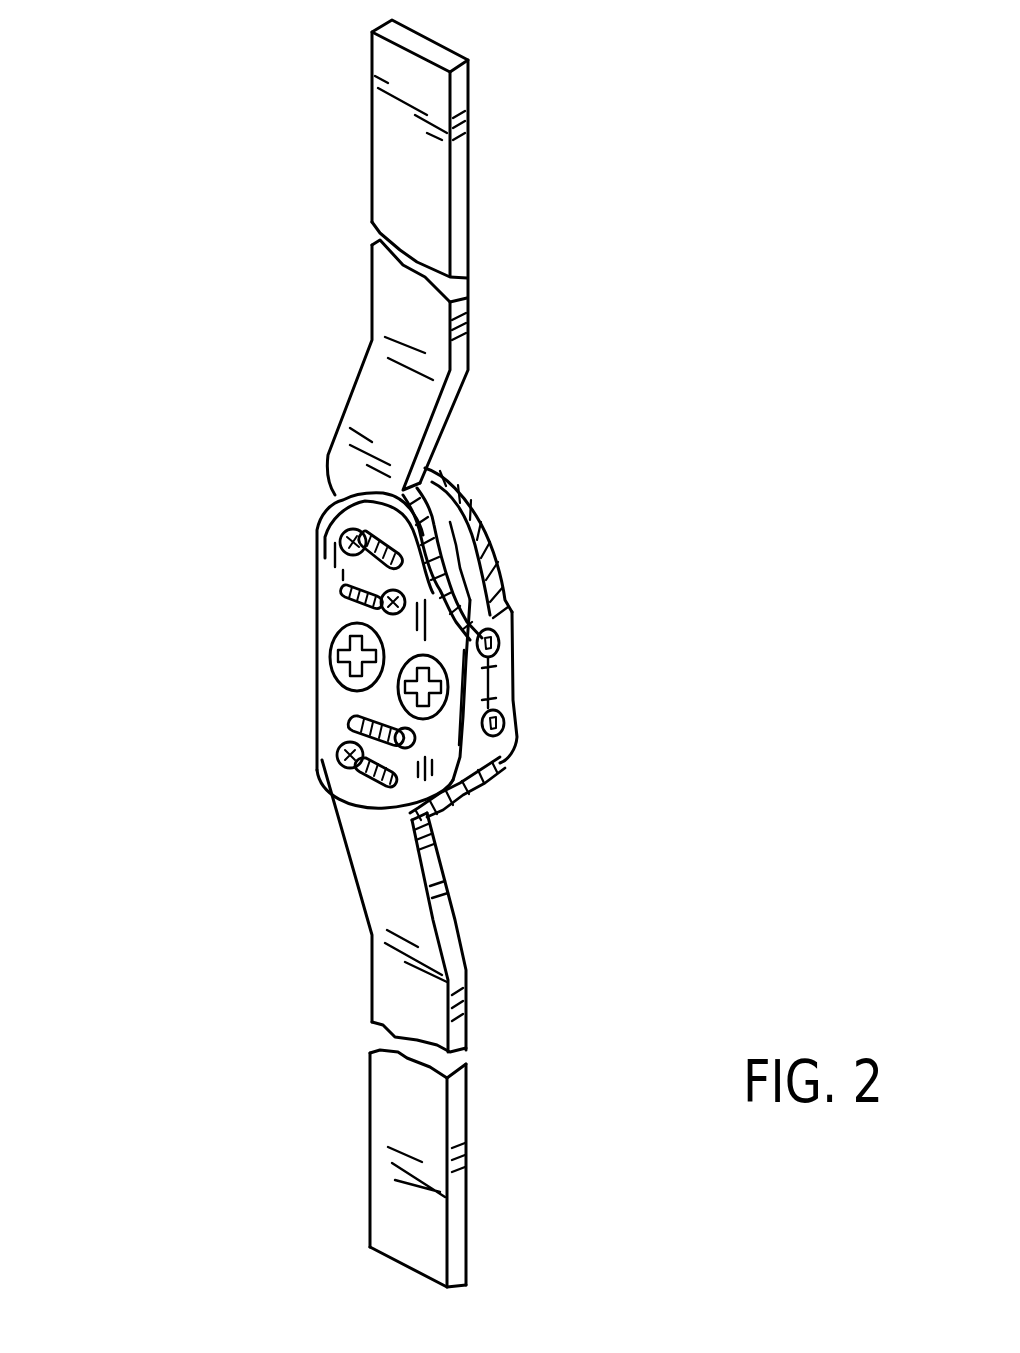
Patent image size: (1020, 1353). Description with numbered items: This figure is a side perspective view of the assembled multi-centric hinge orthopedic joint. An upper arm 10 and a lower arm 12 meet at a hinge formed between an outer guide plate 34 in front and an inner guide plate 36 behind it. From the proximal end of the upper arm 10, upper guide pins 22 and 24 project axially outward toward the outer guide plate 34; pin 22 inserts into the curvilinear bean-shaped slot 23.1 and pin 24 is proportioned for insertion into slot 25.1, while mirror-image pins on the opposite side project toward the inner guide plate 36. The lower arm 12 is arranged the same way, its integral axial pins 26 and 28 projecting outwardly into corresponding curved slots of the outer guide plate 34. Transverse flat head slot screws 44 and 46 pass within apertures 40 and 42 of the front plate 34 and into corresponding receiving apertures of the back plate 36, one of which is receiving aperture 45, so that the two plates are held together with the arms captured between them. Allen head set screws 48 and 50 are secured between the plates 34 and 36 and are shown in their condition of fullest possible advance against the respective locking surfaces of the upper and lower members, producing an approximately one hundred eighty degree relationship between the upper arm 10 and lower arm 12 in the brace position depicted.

The upper arm 10 is at (467, 313).
The lower arm 12 is at (467, 1013).
The upper guide pin 22 is at (340, 542).
The curvilinear bean-shaped slot 23.1 is at (597, 450).
The upper guide pin 24 is at (477, 550).
The slot 25.1 is at (345, 590).
The axial pin 26 is at (357, 783).
The axial pin 28 is at (337, 766).
The outer guide plate 34 is at (337, 707).
The inner guide plate 36 is at (520, 612).
The aperture 40 is at (345, 600).
The aperture 42 is at (443, 807).
The transverse flat head slot screw 44 is at (330, 653).
The receiving aperture 45 is at (480, 521).
The transverse flat head slot screw 46 is at (455, 698).
The Allen head set screw 48 is at (513, 643).
The Allen head set screw 50 is at (503, 737).